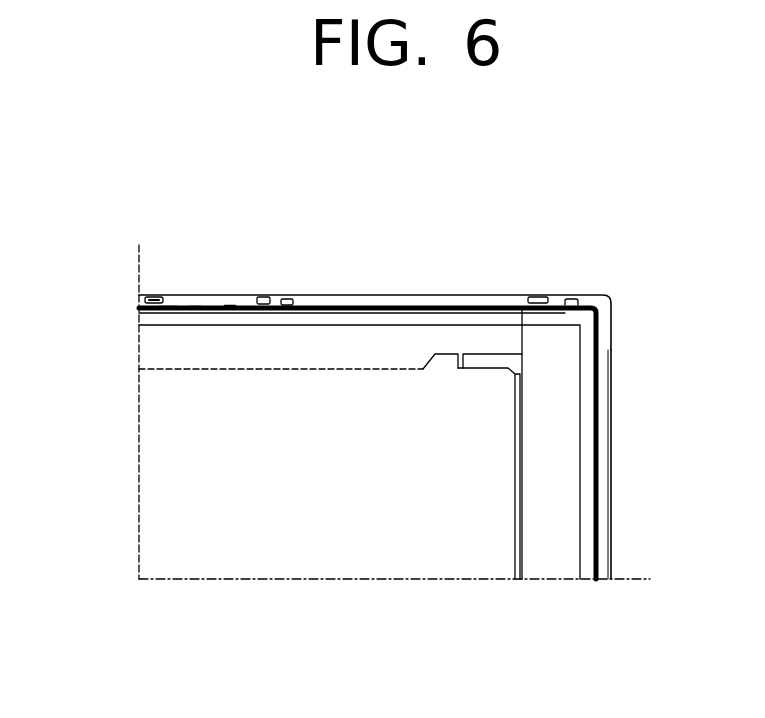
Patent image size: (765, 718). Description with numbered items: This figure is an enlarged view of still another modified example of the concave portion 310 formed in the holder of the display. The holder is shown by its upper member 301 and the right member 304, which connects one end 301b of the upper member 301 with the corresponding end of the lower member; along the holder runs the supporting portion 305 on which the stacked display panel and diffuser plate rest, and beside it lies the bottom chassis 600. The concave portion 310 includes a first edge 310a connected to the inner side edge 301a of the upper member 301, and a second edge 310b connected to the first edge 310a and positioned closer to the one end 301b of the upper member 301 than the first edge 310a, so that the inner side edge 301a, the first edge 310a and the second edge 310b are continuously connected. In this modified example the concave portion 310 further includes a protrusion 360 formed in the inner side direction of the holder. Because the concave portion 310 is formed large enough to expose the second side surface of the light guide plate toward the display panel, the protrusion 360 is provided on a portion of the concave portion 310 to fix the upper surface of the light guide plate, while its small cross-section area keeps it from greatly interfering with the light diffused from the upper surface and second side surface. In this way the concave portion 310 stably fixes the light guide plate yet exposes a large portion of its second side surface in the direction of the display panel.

The bottom chassis 600 is at (205, 296).
The supporting portion 305 is at (140, 320).
The right member 304 is at (558, 488).
The upper member 301 is at (152, 350).
The inner side edge 301a is at (175, 370).
The one end 301b is at (523, 340).
The concave portion 310 is at (507, 223).
The first edge 310a is at (423, 358).
The second edge 310b is at (498, 352).
The protrusion 360 is at (462, 368).